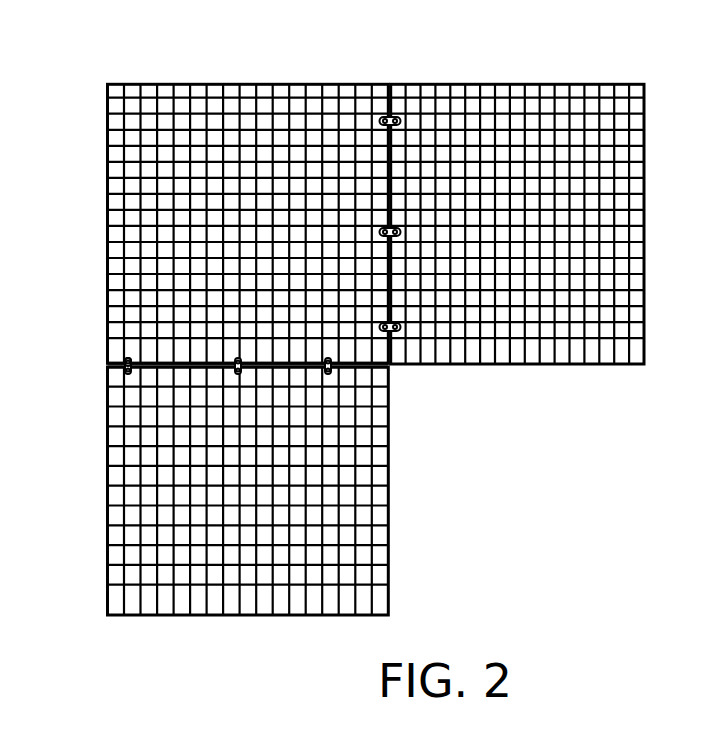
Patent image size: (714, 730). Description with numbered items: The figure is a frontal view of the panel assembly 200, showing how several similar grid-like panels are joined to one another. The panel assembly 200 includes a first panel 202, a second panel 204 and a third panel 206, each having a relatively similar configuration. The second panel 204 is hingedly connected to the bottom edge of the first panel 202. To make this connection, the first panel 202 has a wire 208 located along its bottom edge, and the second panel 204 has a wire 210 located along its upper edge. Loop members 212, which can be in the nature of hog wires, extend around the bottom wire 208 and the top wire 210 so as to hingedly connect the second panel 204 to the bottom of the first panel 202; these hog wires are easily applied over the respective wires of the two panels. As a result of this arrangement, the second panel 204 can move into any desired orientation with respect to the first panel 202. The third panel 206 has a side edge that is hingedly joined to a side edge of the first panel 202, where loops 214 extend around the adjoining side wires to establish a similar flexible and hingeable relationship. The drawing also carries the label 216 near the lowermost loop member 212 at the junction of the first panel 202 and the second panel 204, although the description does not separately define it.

The panel assembly 200 is at (346, 317).
The first panel 202 is at (217, 93).
The second panel 204 is at (378, 442).
The third panel 206 is at (488, 93).
The wire 208 is at (147, 360).
The wire 210 is at (363, 370).
The loop members 212 is at (122, 373).
The loops 214 is at (391, 118).
The connector clip upper portion 216 is at (122, 360).